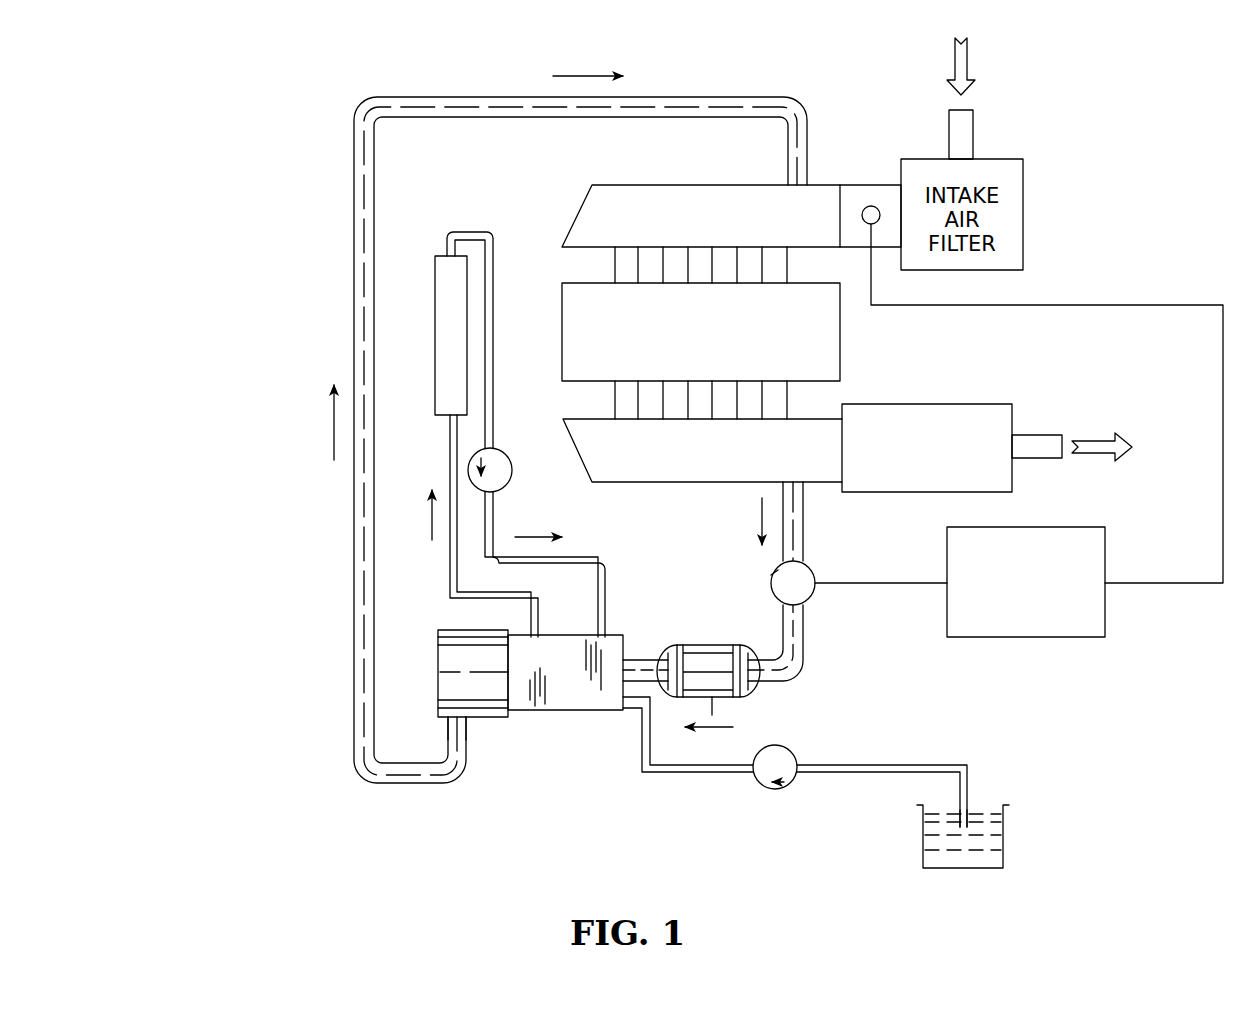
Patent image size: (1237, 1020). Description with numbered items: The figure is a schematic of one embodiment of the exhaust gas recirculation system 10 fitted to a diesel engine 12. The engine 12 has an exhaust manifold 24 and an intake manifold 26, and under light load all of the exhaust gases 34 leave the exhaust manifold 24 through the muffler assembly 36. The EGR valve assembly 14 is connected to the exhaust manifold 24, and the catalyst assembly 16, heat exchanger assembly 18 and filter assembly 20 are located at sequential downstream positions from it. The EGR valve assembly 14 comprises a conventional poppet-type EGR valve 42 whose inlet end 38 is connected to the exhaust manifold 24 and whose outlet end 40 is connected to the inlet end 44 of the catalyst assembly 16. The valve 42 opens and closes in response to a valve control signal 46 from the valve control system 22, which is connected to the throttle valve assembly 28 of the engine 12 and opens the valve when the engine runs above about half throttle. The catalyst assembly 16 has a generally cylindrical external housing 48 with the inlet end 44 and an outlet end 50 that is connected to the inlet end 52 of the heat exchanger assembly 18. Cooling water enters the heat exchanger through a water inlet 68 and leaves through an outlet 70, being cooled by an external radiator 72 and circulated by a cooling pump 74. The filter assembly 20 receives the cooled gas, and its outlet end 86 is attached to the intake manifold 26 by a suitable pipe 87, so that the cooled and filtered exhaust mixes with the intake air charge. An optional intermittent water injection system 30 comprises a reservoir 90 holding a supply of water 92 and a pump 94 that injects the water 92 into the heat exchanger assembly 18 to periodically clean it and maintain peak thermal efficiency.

The exhaust gas recirculation system 10 is at (305, 90).
The engine 12 is at (842, 337).
The EGR valve assembly 14 is at (815, 597).
The catalyst assembly 16 is at (710, 640).
The heat exchanger assembly 18 is at (584, 713).
The filter assembly 20 is at (488, 720).
The valve control system 22 is at (1027, 640).
The exhaust manifold 24 is at (718, 483).
The intake manifold 26 is at (651, 185).
The throttle valve assembly 28 is at (871, 206).
The intermittent water injection system 30 is at (675, 772).
The exhaust gases 34 is at (1098, 440).
The muffler assembly 36 is at (974, 404).
The inlet end 38 is at (805, 517).
The outlet end 40 is at (805, 645).
The EGR valve 42 is at (773, 580).
The inlet end 44 is at (742, 690).
The valve control signal 46 is at (912, 582).
The external housing 48 is at (710, 697).
The outlet end 50 is at (670, 648).
The inlet end 52 is at (640, 660).
The water inlet 68 is at (588, 556).
The outlet 70 is at (536, 617).
The external radiator 72 is at (442, 256).
The cooling pump 74 is at (506, 480).
The outlet end 86 is at (448, 745).
The pipe 87 is at (354, 263).
The reservoir 90 is at (1003, 841).
The water 92 is at (986, 810).
The pump 94 is at (790, 786).